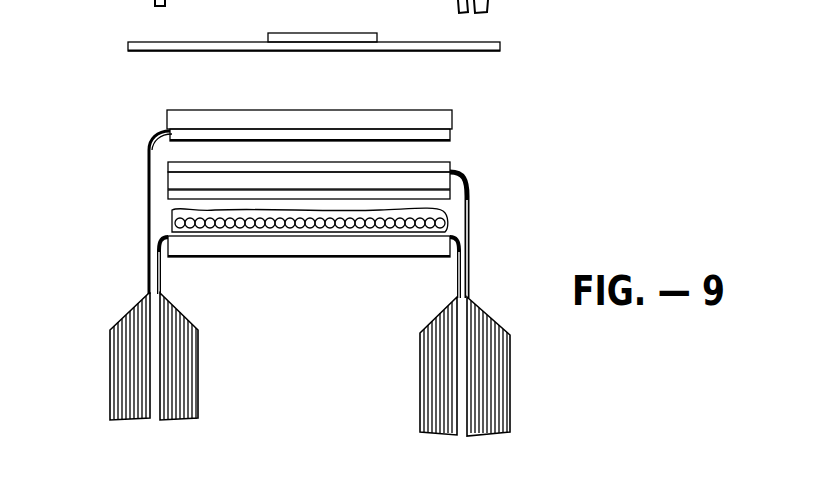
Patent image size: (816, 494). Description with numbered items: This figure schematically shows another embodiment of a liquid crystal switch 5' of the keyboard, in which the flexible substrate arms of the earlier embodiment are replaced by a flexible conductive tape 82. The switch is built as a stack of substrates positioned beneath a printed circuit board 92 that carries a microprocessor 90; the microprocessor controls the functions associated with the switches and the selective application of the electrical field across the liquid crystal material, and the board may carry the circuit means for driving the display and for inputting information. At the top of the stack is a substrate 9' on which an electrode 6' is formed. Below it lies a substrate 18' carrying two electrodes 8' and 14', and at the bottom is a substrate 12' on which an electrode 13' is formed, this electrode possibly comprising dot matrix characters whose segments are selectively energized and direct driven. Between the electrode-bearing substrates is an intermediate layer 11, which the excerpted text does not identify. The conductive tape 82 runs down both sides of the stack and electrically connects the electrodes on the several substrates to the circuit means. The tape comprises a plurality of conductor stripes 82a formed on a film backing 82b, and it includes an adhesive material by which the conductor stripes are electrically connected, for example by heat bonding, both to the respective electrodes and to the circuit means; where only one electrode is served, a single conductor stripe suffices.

The printed circuit board 92 is at (128, 46).
The microprocessor 90 is at (310, 33).
The switch 5' is at (145, 82).
The substrate 9' is at (309, 110).
The electrode 6' is at (265, 208).
The electrode 8' is at (267, 159).
The substrate 18' is at (251, 183).
The electrode 14' is at (260, 207).
The bonding layer 11 is at (172, 215).
The electrode 13' is at (353, 228).
The substrate 12' is at (309, 260).
The flexible conductive tape 82 is at (149, 270).
The conductor stripes 82a is at (190, 342).
The film backing 82b is at (198, 396).